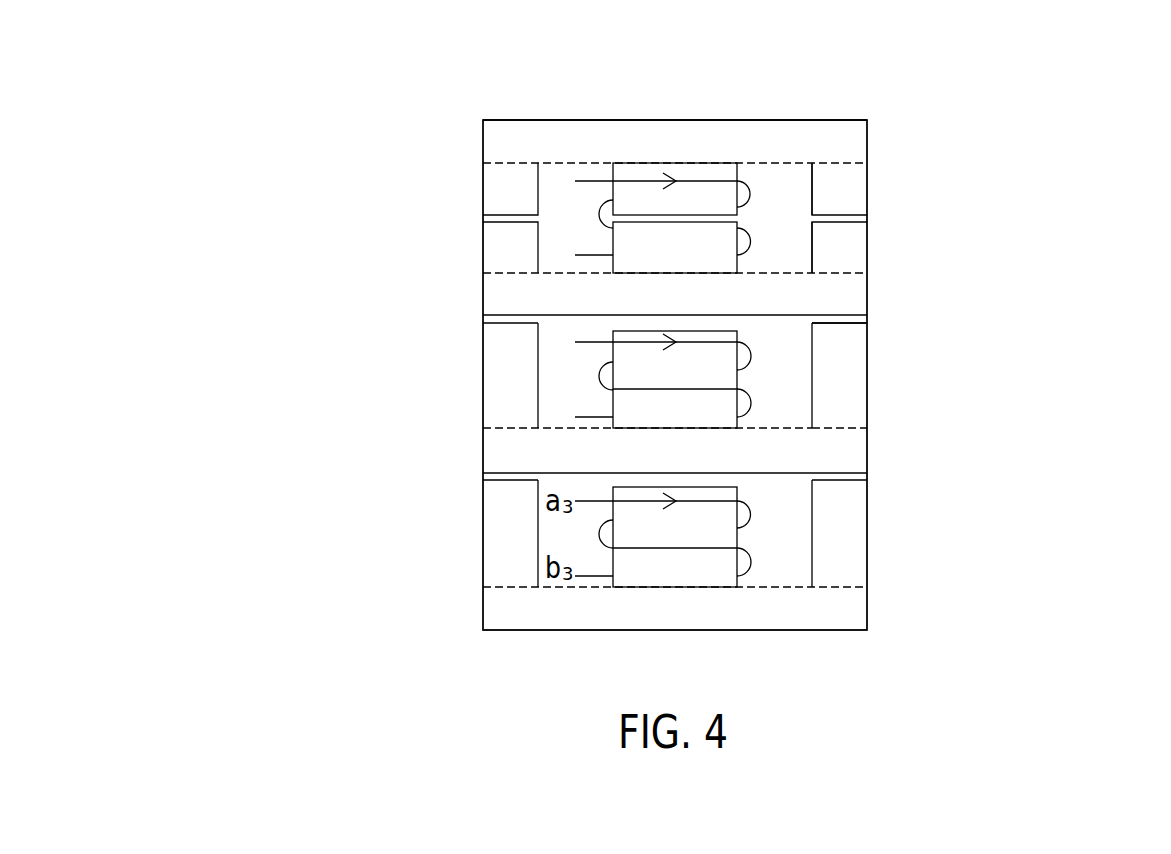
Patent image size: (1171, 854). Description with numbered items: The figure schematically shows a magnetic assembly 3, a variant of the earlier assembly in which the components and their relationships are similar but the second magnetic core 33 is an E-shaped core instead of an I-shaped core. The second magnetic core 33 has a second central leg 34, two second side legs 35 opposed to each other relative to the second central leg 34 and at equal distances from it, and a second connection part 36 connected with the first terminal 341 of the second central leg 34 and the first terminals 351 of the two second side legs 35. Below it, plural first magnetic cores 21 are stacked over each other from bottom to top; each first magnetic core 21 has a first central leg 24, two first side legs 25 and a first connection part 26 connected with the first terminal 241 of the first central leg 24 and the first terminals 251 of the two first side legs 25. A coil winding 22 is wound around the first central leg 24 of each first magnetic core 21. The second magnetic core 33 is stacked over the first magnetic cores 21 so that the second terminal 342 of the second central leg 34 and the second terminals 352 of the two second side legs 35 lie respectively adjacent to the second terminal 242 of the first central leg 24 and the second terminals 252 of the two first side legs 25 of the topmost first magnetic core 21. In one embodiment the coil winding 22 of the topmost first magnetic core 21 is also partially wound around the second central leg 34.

The magnetic assembly 3 is at (1145, 109).
The second magnetic core 33 is at (447, 125).
The second connection part 36 is at (570, 143).
The coil winding 22 is at (673, 168).
The first magnetic core 21 is at (460, 235).
The second central leg 34 is at (717, 195).
The first terminal of the second central leg 341 is at (650, 170).
The second terminal of the second central leg 342 is at (667, 214).
The second side leg 35 is at (827, 188).
The first terminal of the second side leg 351 is at (838, 172).
The second terminal of the second side leg 352 is at (838, 212).
The first connection part 26 is at (498, 442).
The first central leg 24 is at (672, 370).
The second terminal of the first central leg 242 is at (650, 337).
The first terminal of the first central leg 241 is at (658, 433).
The first side leg 25 is at (832, 378).
The second terminal of the first side leg 252 is at (838, 323).
The first terminal of the first side leg 251 is at (842, 427).